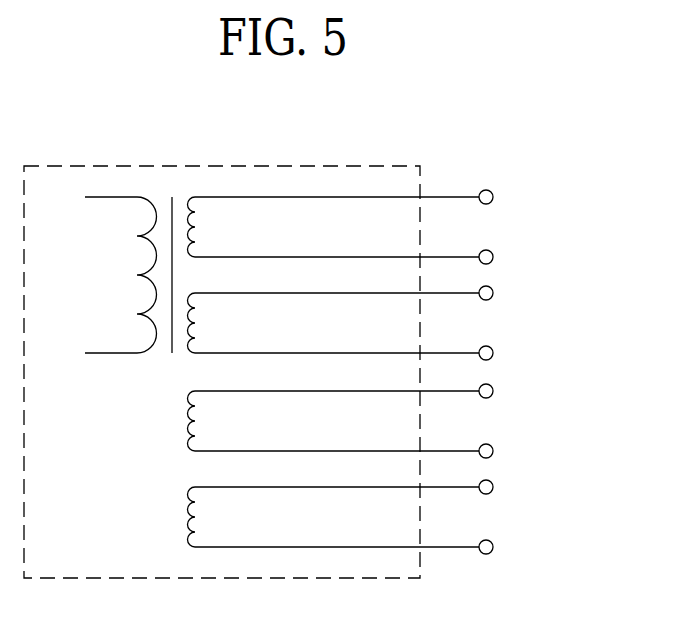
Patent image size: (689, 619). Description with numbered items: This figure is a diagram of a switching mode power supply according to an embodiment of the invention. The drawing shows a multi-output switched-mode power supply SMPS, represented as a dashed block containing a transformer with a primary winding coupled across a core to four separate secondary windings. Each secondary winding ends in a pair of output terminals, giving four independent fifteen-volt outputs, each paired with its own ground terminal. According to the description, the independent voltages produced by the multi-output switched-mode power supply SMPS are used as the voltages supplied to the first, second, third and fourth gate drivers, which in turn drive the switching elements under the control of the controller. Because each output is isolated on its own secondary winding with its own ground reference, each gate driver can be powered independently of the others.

The switched-mode power supply SMPS is at (222, 351).